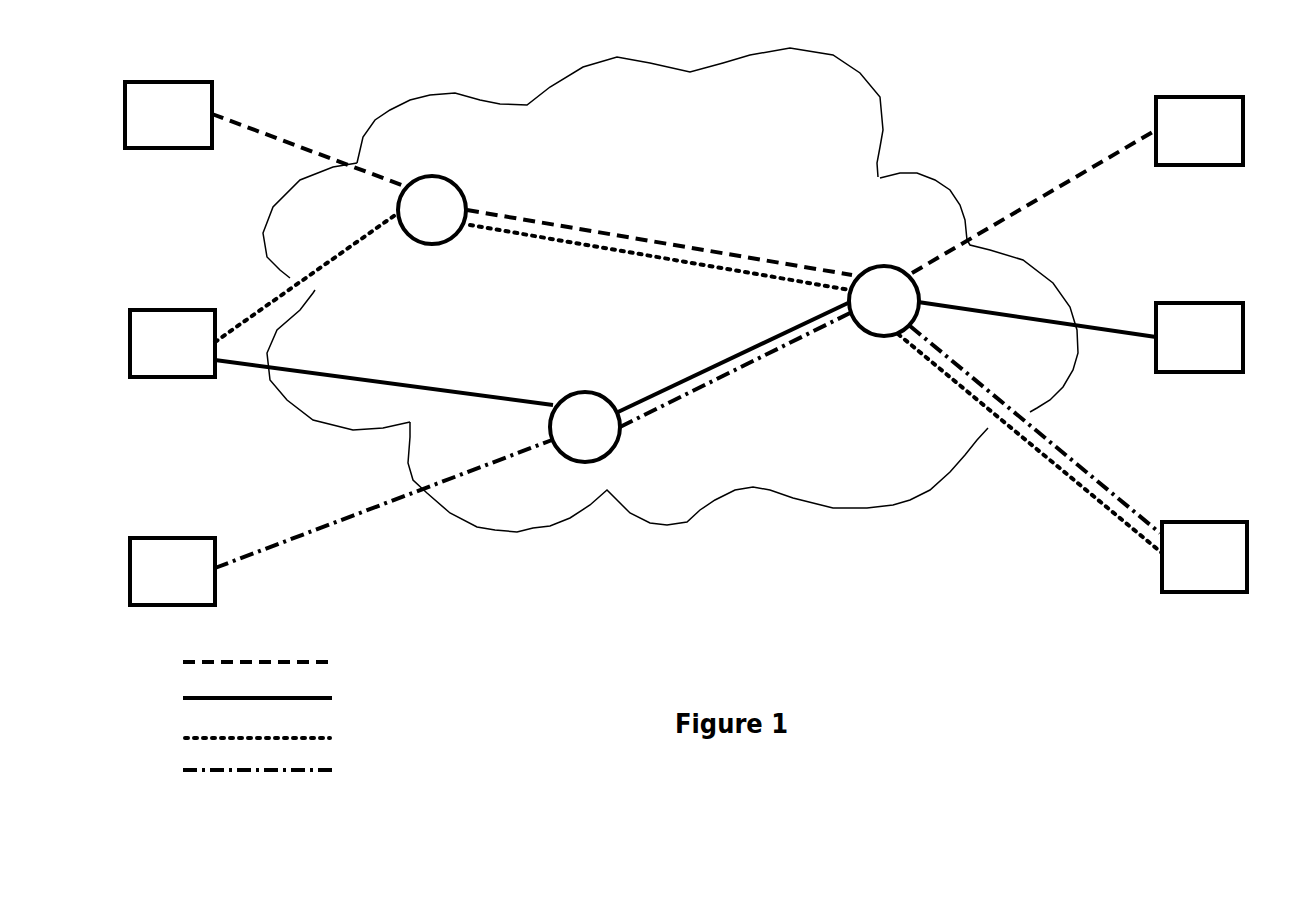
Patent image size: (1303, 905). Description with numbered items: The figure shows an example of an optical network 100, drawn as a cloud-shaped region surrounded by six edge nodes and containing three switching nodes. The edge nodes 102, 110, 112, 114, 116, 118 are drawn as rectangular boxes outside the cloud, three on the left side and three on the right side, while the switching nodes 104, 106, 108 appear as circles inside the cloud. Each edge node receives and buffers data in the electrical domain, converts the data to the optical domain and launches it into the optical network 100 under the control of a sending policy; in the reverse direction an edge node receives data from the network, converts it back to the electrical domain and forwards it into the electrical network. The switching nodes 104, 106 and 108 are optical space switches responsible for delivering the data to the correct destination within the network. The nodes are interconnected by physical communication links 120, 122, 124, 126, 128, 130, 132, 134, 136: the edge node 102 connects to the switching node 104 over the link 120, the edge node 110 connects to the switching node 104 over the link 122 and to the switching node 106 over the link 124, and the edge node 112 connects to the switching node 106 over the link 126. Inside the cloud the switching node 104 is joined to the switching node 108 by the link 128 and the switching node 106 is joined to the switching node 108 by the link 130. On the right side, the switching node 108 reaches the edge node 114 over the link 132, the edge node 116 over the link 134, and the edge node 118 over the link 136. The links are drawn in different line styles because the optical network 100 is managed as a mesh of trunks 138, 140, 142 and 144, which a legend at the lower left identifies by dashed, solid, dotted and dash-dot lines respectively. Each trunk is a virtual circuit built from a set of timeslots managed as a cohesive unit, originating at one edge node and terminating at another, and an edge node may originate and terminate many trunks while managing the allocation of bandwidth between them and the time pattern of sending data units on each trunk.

The optical network 100 is at (670, 270).
The edge node 102 is at (168, 115).
The switching node 104 is at (432, 210).
The switching node 106 is at (585, 427).
The switching node 108 is at (884, 301).
The edge node 110 is at (172, 343).
The edge node 112 is at (172, 571).
The edge node 114 is at (1199, 131).
The edge node 116 is at (1199, 337).
The edge node 118 is at (1204, 557).
The physical communication link 120 is at (309, 150).
The physical communication link 122 is at (306, 277).
The physical communication link 124 is at (384, 382).
The physical communication link 126 is at (383, 504).
The physical communication link 128 is at (659, 250).
The physical communication link 130 is at (734, 365).
The physical communication link 132 is at (1034, 201).
The physical communication link 134 is at (1037, 319).
The physical communication link 136 is at (1030, 439).
The trunk 138 is at (286, 660).
The trunk 140 is at (286, 696).
The trunk 142 is at (287, 736).
The trunk 144 is at (286, 768).